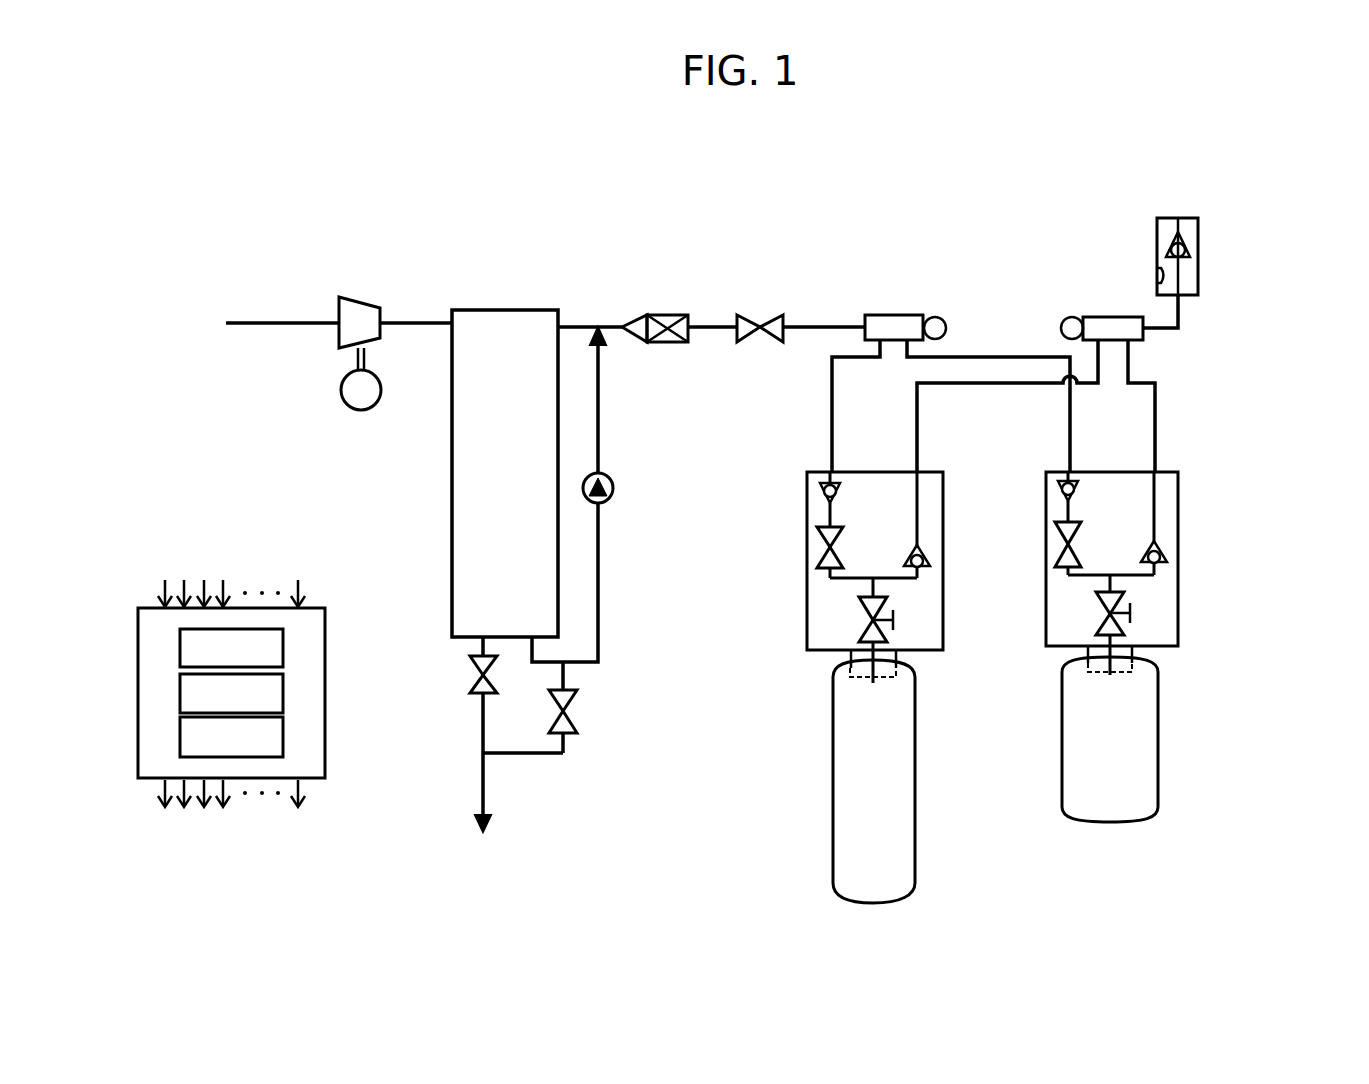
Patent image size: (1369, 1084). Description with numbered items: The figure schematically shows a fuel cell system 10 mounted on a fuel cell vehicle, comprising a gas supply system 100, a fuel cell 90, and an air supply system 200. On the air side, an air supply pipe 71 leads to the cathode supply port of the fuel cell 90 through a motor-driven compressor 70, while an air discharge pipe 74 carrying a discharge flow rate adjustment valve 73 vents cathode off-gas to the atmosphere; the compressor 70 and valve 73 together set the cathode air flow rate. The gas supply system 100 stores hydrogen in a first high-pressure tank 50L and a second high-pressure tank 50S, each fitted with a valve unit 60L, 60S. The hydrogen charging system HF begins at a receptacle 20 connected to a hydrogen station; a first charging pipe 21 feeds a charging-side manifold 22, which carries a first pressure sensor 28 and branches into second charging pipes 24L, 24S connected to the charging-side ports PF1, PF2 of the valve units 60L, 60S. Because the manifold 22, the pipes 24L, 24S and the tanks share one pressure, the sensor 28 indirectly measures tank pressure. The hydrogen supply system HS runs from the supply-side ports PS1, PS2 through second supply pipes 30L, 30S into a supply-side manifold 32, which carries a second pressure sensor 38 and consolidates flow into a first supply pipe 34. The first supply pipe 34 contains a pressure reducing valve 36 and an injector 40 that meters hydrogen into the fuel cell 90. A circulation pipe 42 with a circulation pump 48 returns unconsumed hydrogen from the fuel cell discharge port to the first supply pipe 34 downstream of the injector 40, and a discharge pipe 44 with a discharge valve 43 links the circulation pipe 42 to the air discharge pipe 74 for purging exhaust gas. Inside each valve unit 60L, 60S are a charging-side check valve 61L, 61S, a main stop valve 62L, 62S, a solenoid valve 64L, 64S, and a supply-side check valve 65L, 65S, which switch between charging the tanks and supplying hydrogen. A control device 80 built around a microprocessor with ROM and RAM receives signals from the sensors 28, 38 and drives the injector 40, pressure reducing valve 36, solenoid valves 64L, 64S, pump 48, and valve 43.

The fuel cell system 10 is at (290, 140).
The receptacle 20 is at (1200, 287).
The first charging pipe 21 is at (1180, 316).
The charging-side manifold 22 is at (1110, 317).
The second charging pipe 24L is at (967, 385).
The second charging pipe 24S is at (1160, 412).
The first pressure sensor 28 is at (1075, 315).
The second supply pipe 30L is at (827, 410).
The second supply pipe 30S is at (975, 352).
The supply-side manifold 32 is at (907, 315).
The first supply pipe 34 is at (827, 325).
The pressure reducing valve 36 is at (753, 315).
The second pressure sensor 38 is at (942, 315).
The injector 40 is at (672, 315).
The circulation pipe 42 is at (600, 613).
The discharge valve 43 is at (578, 723).
The discharge pipe 44 is at (566, 746).
The circulation pump 48 is at (612, 497).
The first high-pressure tank 50L is at (897, 895).
The second high-pressure tank 50S is at (1132, 816).
The valve unit 60L is at (806, 642).
The valve unit 60S is at (1180, 600).
The charging-side check valve 61L is at (925, 548).
The charging-side check valve 61S is at (1162, 548).
The main stop valve 62L is at (862, 622).
The main stop valve 62S is at (1122, 633).
The solenoid valve 64L is at (822, 560).
The solenoid valve 64S is at (1078, 537).
The supply-side check valve 65L is at (820, 492).
The supply-side check valve 65S is at (1075, 497).
The compressor 70 is at (367, 300).
The air supply pipe 71 is at (264, 322).
The discharge flow rate adjustment valve 73 is at (472, 690).
The air discharge pipe 74 is at (482, 775).
The control device 80 is at (328, 673).
The fuel cell 90 is at (520, 310).
The gas supply system 100 is at (1222, 918).
The air supply system 200 is at (320, 425).
The hydrogen supply system HS is at (910, 235).
The hydrogen charging system HF is at (1106, 228).
The supply-side port PS1 is at (828, 472).
The charging-side port PF1 is at (915, 472).
The supply-side port PS2 is at (1065, 472).
The charging-side port PF2 is at (1152, 472).